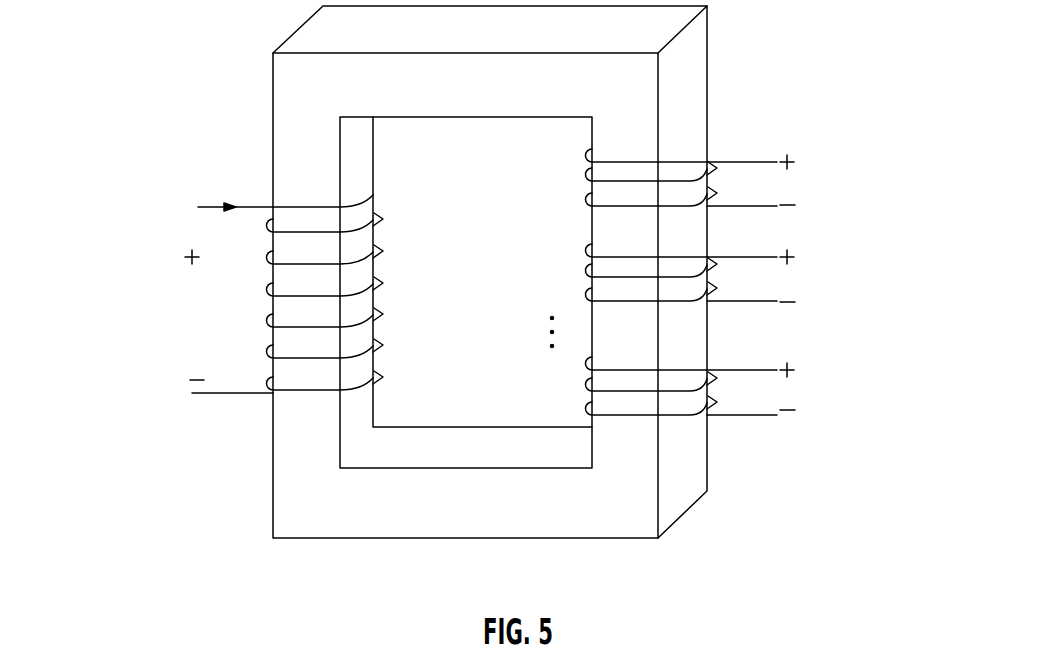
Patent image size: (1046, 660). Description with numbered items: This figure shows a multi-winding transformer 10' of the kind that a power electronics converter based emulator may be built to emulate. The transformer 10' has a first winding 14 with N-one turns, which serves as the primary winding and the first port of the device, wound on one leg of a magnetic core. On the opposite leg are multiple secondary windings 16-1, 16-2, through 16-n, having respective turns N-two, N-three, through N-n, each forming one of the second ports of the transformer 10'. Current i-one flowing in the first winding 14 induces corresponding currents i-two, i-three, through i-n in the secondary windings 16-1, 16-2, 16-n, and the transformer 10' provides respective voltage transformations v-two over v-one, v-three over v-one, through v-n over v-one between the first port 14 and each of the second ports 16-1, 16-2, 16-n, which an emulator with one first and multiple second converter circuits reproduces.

The transformer 10' is at (580, 312).
The first winding 14 is at (146, 176).
The secondary winding 16-1 is at (810, 148).
The secondary winding 16-2 is at (818, 245).
The secondary winding 16-n is at (818, 357).